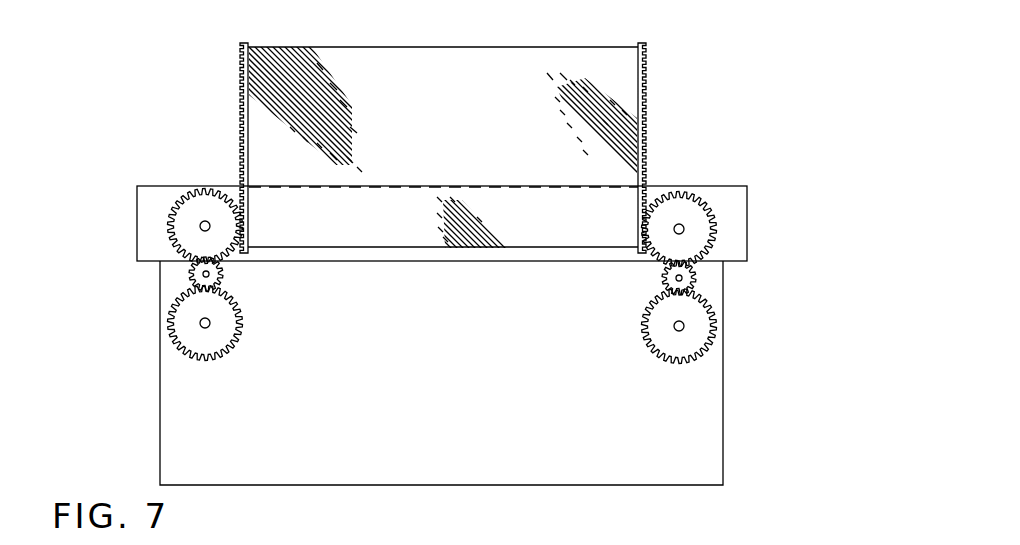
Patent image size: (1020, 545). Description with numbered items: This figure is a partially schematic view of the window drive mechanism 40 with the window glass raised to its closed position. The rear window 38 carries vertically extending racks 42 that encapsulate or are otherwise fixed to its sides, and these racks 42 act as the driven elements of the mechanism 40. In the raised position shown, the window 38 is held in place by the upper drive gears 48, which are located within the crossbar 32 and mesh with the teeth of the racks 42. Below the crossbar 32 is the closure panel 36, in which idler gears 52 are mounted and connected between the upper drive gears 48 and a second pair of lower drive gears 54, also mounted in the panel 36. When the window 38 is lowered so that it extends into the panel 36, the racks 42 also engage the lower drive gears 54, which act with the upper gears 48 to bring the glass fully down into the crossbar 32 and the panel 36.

The crossbar 32 is at (157, 185).
The closure panel 36 is at (185, 433).
The rear window 38 is at (325, 57).
The window drive mechanism 40 is at (158, 272).
The racks 42 is at (242, 133).
The upper drive gears 48 is at (175, 222).
The idler gears 52 is at (186, 276).
The lower drive gears 54 is at (183, 331).